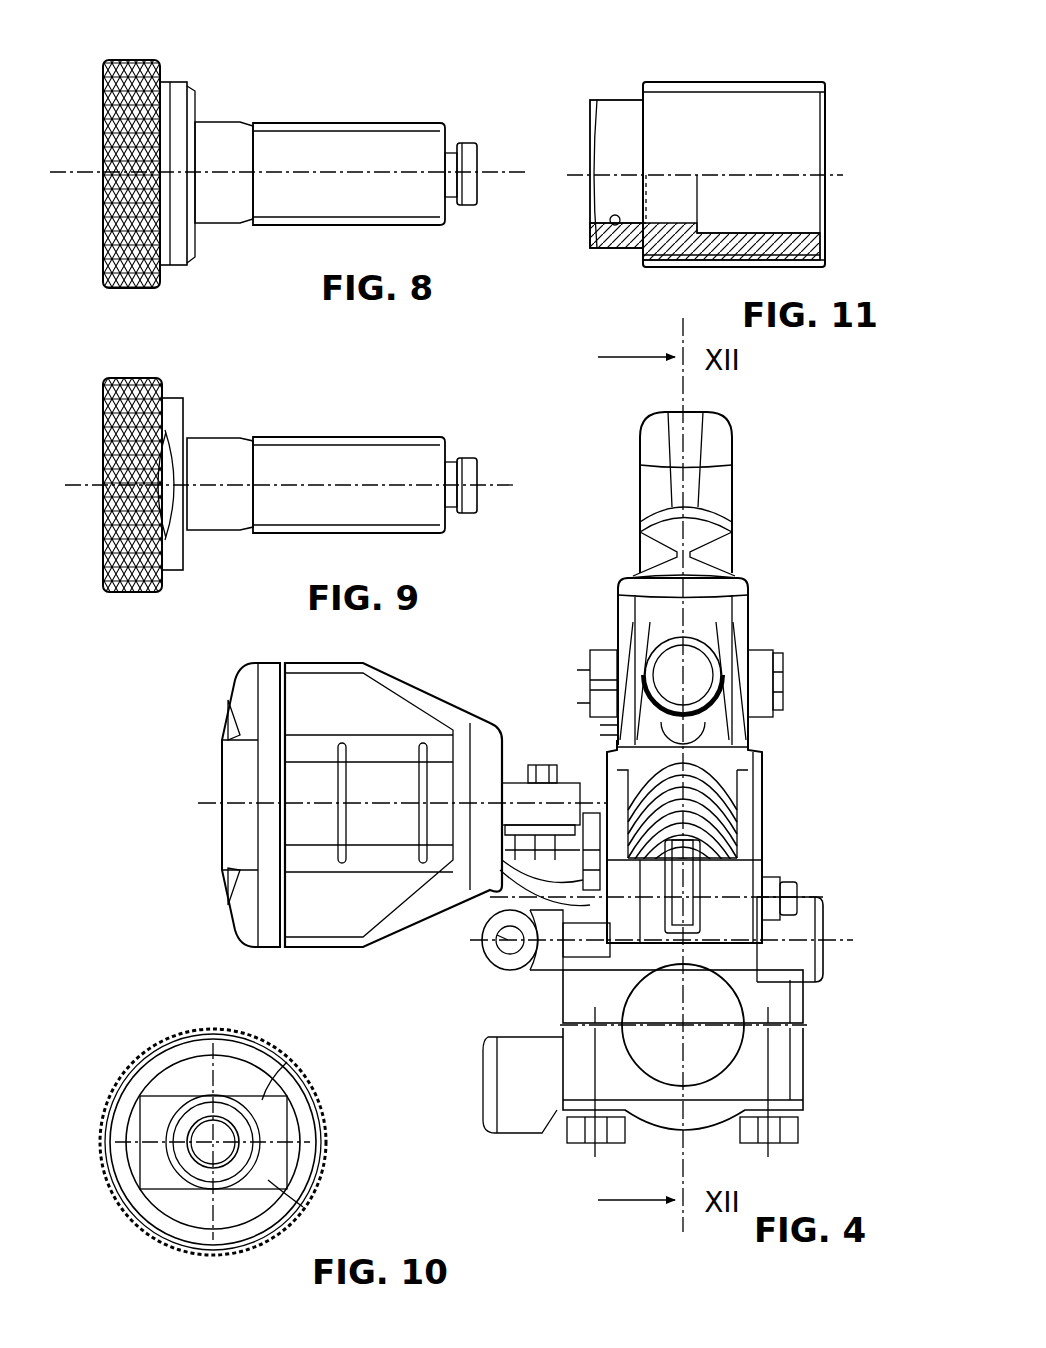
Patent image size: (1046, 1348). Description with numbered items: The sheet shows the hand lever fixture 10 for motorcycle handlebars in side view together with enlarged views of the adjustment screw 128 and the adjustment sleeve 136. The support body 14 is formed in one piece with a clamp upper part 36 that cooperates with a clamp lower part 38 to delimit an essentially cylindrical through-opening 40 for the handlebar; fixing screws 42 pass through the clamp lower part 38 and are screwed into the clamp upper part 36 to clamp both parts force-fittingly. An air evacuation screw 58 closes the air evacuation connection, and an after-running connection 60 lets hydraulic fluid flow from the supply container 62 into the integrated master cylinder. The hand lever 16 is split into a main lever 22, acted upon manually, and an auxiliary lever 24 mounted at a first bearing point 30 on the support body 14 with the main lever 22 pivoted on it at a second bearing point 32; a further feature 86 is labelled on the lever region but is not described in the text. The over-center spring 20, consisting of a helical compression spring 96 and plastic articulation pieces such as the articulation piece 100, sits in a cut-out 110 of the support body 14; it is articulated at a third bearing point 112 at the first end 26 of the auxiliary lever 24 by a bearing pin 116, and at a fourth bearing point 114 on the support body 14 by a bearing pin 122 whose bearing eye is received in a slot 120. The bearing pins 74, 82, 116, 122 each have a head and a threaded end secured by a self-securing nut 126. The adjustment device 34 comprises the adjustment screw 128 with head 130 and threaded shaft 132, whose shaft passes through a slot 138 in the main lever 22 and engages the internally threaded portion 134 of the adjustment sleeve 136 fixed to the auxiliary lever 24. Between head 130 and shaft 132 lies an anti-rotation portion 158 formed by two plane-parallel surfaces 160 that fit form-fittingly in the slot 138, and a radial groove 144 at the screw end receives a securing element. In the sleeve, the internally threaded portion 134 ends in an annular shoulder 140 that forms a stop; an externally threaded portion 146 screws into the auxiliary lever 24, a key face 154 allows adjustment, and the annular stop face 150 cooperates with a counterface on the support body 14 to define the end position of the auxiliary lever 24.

In FIG. 4, the hand lever fixture 10 is at (558, 799).
In FIG. 4, the support body 14 is at (826, 995).
In FIG. 4, the hand lever 16 is at (683, 666).
In FIG. 4, the over-center spring 20 is at (620, 800).
In FIG. 4, the main lever 22 is at (650, 500).
In FIG. 4, the auxiliary lever 24 is at (755, 748).
In FIG. 4, the first end 26 is at (737, 778).
In FIG. 4, the first bearing point 30 is at (590, 700).
In FIG. 4, the second bearing point 32 is at (590, 660).
In FIG. 4, the adjustment device 34 is at (752, 650).
In FIG. 4, the clamp upper part 36 is at (805, 1010).
In FIG. 4, the clamp lower part 38 is at (803, 1085).
In FIG. 4, the through-opening 40 is at (645, 995).
In FIG. 4, the fixing screw 42 is at (750, 1135).
In FIG. 4, the air evacuation screw 58 is at (485, 958).
In FIG. 4, the after-running connection 60 is at (488, 925).
In FIG. 4, the supply container 62 is at (362, 805).
In FIG. 4, the bearing pin 74 is at (600, 730).
In FIG. 4, the bearing pin 82 is at (598, 650).
In FIG. 4, the neck 86 is at (664, 580).
In FIG. 4, the helical compression spring 96 is at (755, 850).
In FIG. 4, the articulation piece 100 is at (635, 901).
In FIG. 4, the cut-out 110 is at (700, 888).
In FIG. 4, the third bearing point 112 is at (577, 812).
In FIG. 4, the fourth bearing point 114 is at (519, 960).
In FIG. 4, the bearing pin 116 is at (545, 765).
In FIG. 4, the slot 120 is at (712, 886).
In FIG. 4, the bearing pin 122 is at (500, 870).
In FIG. 4, the self-securing nut 126 is at (785, 700).
In FIG. 8, the adjustment screw 128 is at (355, 128).
In FIG. 9, the adjustment screw 128 is at (343, 445).
In FIG. 10, the adjustment screw 128 is at (221, 1125).
In FIG. 4, the adjustment screw 128 is at (683, 675).
In FIG. 8, the head 130 is at (122, 60).
In FIG. 9, the head 130 is at (120, 378).
In FIG. 10, the head 130 is at (172, 1060).
In FIG. 8, the threaded shaft 132 is at (313, 152).
In FIG. 9, the threaded shaft 132 is at (325, 465).
In FIG. 10, the threaded shaft 132 is at (233, 1090).
In FIG. 11, the internally threaded portion 134 is at (612, 226).
In FIG. 11, the adjustment sleeve 136 is at (745, 161).
In FIG. 4, the slot 138 is at (712, 662).
In FIG. 11, the annular shoulder 140 is at (698, 200).
In FIG. 8, the radial groove 144 is at (452, 150).
In FIG. 9, the radial groove 144 is at (450, 470).
In FIG. 11, the externally threaded portion 146 is at (717, 268).
In FIG. 11, the stop face 150 is at (828, 248).
In FIG. 11, the key face 154 is at (612, 124).
In FIG. 8, the anti-rotation portion 158 is at (192, 100).
In FIG. 9, the anti-rotation portion 158 is at (193, 450).
In FIG. 10, the anti-rotation portion 158 is at (140, 1220).
In FIG. 8, the plane-parallel surfaces 160 is at (188, 190).
In FIG. 9, the plane-parallel surfaces 160 is at (103, 477).
In FIG. 10, the plane-parallel surfaces 160 is at (305, 1207).